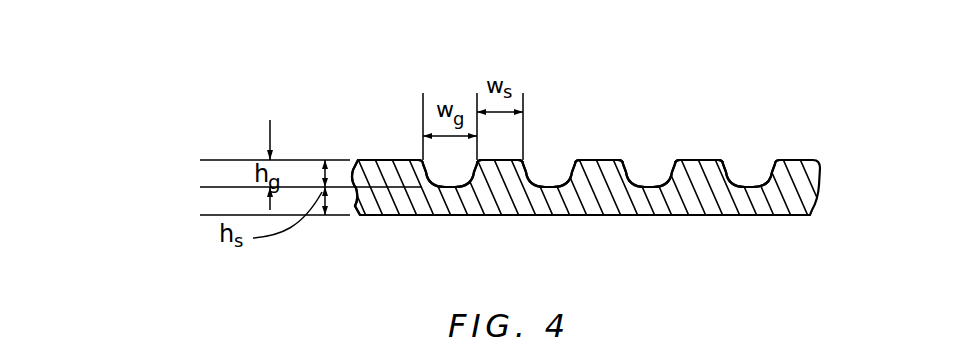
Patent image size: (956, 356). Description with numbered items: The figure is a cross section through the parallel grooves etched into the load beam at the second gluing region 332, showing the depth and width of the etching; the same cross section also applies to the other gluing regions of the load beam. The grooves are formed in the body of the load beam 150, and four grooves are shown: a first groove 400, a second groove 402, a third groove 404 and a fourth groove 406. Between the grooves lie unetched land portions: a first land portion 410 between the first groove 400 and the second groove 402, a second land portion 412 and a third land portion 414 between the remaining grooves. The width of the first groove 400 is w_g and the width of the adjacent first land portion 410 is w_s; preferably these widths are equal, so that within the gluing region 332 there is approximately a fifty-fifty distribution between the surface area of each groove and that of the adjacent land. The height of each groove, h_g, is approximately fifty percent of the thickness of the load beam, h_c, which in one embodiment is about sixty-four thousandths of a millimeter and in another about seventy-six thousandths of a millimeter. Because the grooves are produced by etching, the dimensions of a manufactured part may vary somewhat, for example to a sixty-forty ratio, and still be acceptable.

The second gluing region 332 is at (615, 90).
The substrate 150 is at (397, 200).
The first groove 400 is at (452, 187).
The second groove 402 is at (553, 187).
The third groove 404 is at (655, 188).
The fourth groove 406 is at (757, 188).
The first land portion 410 is at (513, 188).
The second land portion 412 is at (594, 160).
The third land portion 414 is at (699, 160).